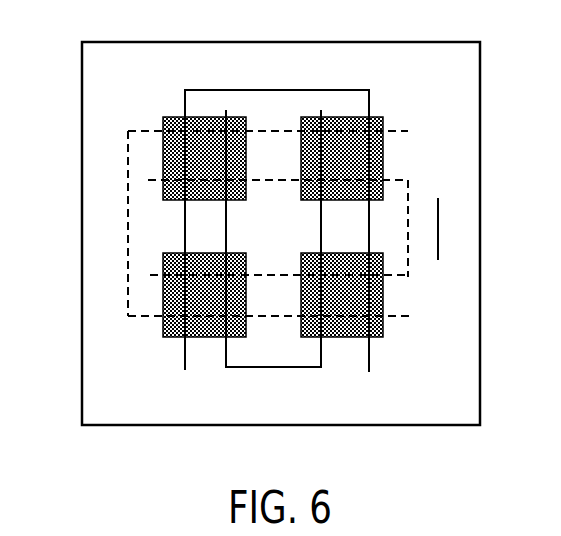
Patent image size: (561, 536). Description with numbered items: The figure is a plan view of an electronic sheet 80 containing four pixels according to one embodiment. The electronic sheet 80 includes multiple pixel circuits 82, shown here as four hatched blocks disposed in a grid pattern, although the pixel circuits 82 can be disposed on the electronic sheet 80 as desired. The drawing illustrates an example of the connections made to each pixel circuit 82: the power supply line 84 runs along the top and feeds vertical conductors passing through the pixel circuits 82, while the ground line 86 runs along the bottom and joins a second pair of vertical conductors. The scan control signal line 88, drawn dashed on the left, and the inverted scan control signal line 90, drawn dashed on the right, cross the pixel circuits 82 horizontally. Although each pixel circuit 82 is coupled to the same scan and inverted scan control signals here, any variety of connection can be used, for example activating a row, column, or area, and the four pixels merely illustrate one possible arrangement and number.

The electronic sheet 80 is at (82, 110).
The pixel circuit 82 is at (165, 115).
The VDD supply line 84 is at (227, 88).
The GND line 86 is at (235, 370).
The SCAN line 88 is at (128, 307).
The inverted SCAN line 90 is at (407, 265).